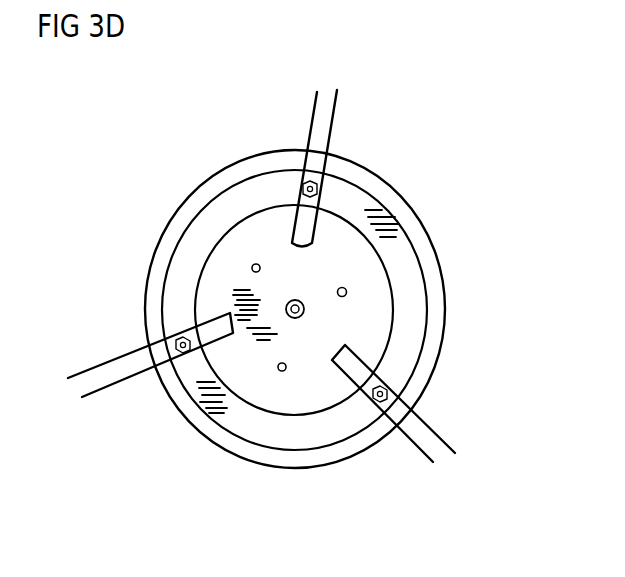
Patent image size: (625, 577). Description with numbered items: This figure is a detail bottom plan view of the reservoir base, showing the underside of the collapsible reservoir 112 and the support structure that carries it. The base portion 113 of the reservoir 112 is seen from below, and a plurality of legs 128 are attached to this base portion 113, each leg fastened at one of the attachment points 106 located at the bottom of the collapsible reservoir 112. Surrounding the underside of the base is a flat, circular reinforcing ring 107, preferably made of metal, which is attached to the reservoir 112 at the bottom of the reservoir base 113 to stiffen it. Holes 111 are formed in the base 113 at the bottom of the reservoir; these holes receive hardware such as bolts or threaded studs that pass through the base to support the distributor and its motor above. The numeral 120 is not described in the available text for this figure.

The attachment points 106 is at (180, 337).
The reinforcing ring 107 is at (205, 212).
The holes 111 is at (347, 294).
The collapsible reservoir 112 is at (452, 250).
The base portion 113 is at (228, 458).
The legs 128 is at (438, 437).
The upper support arm 120 is at (314, 168).